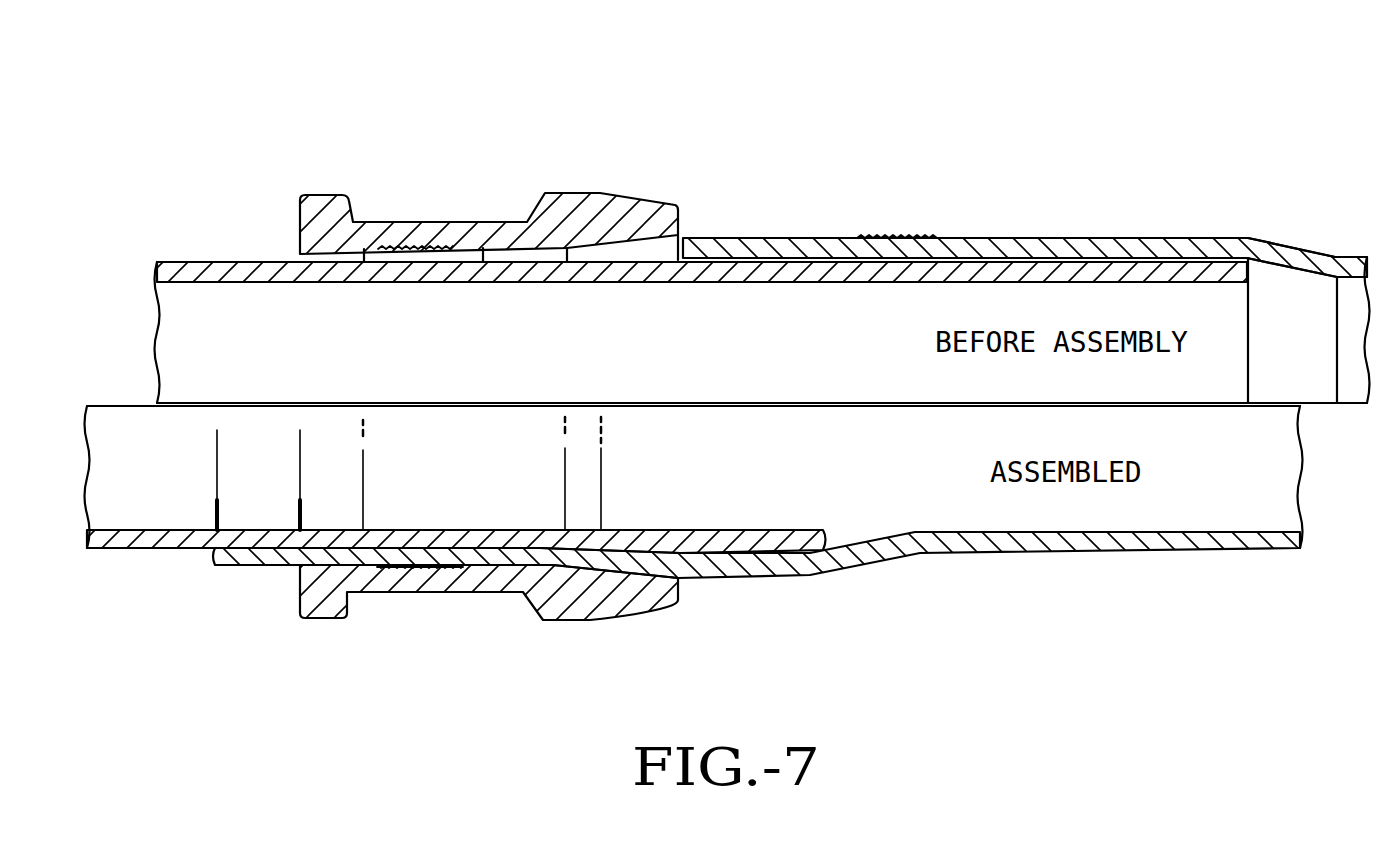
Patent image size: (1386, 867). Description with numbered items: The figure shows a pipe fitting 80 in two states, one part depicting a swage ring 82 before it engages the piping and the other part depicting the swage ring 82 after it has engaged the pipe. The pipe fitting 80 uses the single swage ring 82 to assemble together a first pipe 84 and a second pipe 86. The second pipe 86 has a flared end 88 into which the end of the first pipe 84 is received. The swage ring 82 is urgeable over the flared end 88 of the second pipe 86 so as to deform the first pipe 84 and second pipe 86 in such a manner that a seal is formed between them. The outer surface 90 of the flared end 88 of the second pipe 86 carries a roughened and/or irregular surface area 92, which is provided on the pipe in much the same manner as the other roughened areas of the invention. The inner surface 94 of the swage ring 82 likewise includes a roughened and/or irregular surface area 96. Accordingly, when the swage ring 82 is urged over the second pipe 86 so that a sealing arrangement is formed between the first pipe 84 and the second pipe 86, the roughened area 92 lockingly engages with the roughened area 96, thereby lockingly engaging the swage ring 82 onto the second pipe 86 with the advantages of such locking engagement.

The pipe fitting 80 is at (247, 80).
The swage ring 82 is at (560, 193).
The first pipe 84 is at (738, 283).
The second pipe 86 is at (1155, 238).
The flared end 88 is at (1047, 240).
The outer surface 90 is at (989, 238).
The roughened and/or irregular surface area 92 is at (875, 237).
The inner surface 94 is at (483, 259).
The roughened and/or irregular surface area 96 is at (418, 251).